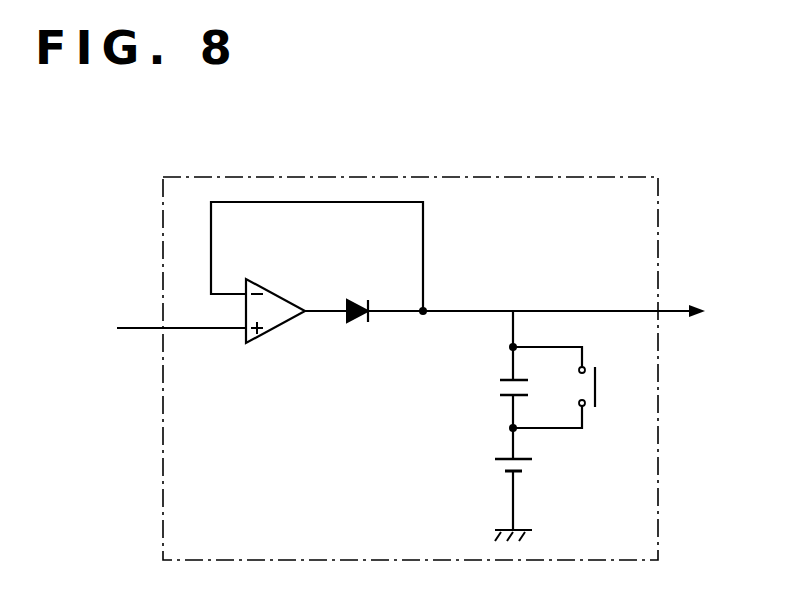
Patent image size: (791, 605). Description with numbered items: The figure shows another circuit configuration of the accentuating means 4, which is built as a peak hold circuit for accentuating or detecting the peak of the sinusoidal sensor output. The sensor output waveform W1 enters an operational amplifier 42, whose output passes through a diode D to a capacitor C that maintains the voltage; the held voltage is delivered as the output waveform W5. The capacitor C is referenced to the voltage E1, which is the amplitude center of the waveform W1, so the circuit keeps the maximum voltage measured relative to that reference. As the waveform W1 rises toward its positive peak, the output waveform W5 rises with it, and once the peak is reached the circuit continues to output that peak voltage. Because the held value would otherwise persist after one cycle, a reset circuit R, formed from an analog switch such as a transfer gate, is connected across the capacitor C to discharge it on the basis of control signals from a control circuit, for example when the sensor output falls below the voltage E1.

The accentuating means 4 is at (553, 175).
The operational amplifier 42 is at (277, 327).
The diode D is at (336, 296).
The capacitor C is at (499, 371).
The reset circuit R is at (566, 387).
The voltage E1 is at (495, 484).
The waveform W1 is at (157, 329).
The waveform W5 is at (555, 313).